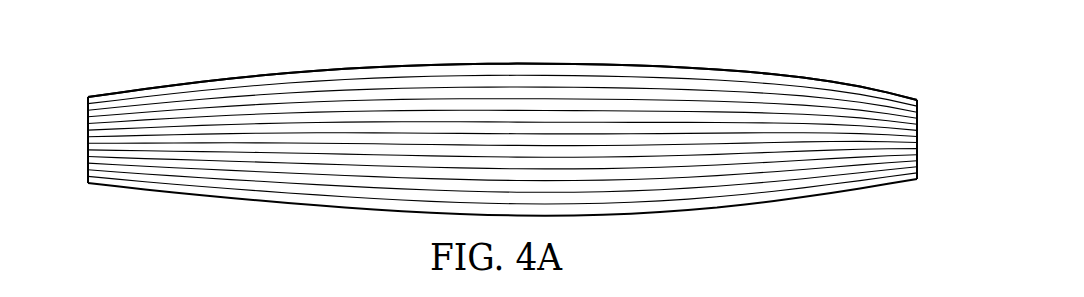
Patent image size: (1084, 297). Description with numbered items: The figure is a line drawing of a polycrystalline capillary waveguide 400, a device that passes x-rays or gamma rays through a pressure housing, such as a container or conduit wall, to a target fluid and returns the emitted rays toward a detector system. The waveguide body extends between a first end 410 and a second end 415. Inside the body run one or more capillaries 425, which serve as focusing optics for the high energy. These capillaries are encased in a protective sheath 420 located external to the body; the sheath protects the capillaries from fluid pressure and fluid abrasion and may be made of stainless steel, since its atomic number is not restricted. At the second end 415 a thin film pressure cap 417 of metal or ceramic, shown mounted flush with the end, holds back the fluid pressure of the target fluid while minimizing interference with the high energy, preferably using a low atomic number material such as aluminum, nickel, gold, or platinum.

The polycrystalline capillary waveguide 400 is at (327, 28).
The first end 410 is at (94, 68).
The second end 415 is at (909, 69).
The pressure cap 417 is at (917, 165).
The sheath 420 is at (393, 63).
The capillaries 425 is at (638, 84).